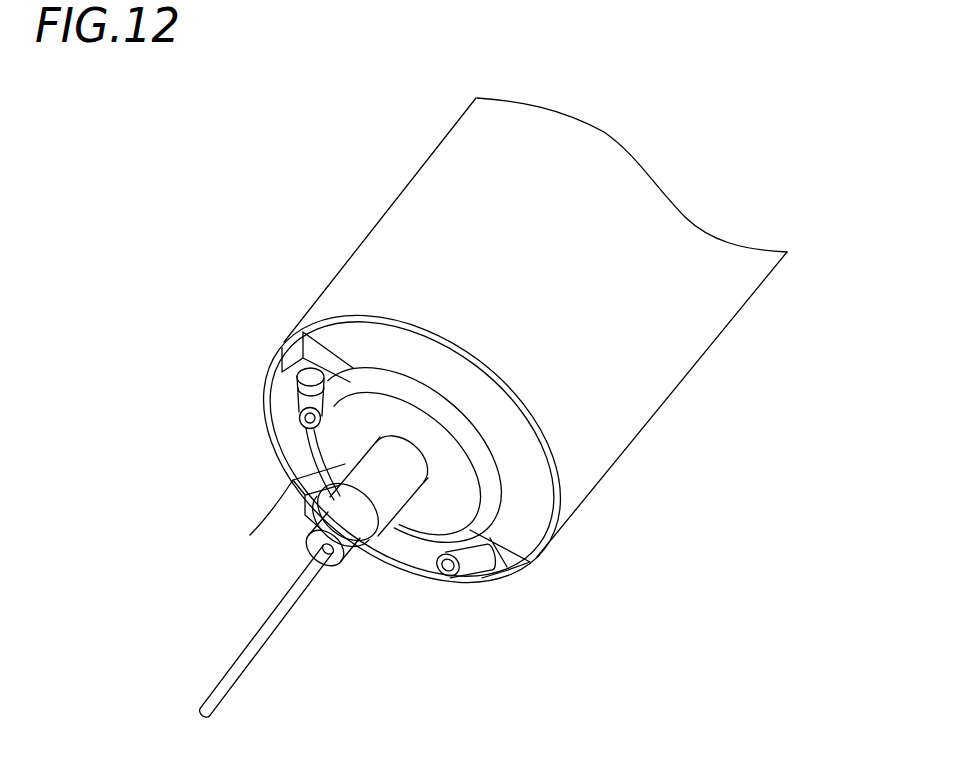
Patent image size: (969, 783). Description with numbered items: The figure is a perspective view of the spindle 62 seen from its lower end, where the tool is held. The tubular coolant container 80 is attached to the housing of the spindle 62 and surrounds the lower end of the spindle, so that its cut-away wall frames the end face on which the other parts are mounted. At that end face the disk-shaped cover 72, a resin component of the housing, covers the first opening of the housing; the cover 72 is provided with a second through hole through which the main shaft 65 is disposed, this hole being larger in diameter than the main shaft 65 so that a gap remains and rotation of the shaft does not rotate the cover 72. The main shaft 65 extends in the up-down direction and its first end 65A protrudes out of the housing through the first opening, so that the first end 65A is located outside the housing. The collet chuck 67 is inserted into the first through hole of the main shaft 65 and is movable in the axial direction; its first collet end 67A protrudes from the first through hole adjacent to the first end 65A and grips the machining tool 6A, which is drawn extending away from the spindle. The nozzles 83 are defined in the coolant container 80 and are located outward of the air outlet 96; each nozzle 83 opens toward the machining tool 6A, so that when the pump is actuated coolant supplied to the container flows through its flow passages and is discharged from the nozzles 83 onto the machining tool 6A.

The coolant container 80 is at (434, 129).
The spindle 62 is at (768, 339).
The cover 72 is at (516, 478).
The air outlet 96 is at (530, 563).
The main shaft 65 is at (417, 516).
The first end 65A is at (345, 463).
The collet chuck 67 is at (310, 505).
The first collet end 67A is at (382, 555).
The machining tool 6A is at (227, 698).
The nozzles 83 is at (307, 431).